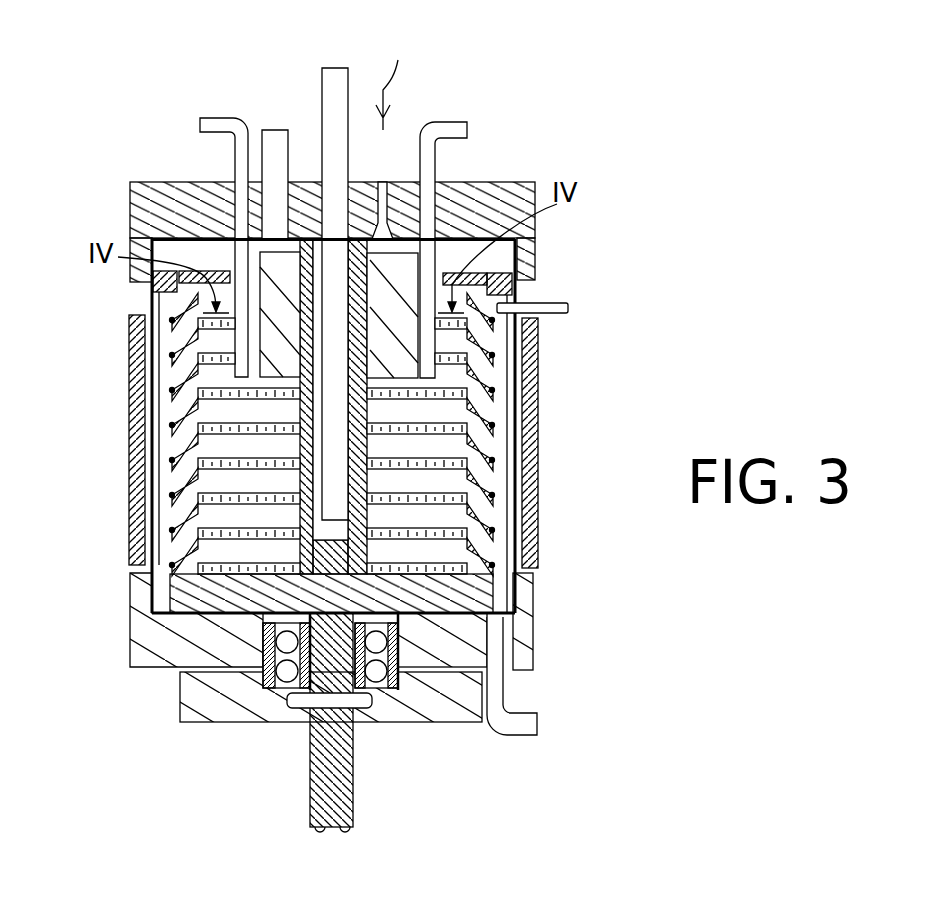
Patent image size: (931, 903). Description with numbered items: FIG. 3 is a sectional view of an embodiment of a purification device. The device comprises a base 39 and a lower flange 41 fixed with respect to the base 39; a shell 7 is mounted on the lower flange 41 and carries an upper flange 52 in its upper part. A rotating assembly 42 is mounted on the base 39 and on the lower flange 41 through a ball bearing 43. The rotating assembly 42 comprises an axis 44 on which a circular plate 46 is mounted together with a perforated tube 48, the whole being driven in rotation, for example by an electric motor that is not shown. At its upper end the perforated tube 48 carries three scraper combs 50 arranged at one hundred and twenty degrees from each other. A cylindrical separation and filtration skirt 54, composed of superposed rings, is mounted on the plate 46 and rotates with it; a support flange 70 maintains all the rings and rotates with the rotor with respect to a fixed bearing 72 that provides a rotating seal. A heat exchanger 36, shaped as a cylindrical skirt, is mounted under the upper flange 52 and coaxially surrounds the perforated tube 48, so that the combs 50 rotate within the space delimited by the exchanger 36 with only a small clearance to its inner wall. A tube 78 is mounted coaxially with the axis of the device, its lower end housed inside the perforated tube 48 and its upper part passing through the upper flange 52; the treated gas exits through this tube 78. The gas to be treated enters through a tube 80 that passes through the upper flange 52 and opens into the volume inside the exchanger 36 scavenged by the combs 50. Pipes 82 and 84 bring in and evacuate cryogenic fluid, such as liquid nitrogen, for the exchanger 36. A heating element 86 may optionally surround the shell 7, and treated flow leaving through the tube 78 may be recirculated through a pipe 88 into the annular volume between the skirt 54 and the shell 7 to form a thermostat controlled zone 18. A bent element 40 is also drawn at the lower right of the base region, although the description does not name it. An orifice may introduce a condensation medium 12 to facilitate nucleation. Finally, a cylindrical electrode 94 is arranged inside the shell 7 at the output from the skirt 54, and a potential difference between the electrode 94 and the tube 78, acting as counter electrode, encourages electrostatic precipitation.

The shell 7 is at (165, 294).
The condensation medium 12 is at (407, 77).
The thermostat controlled zone 18 is at (490, 449).
The heat exchanger 36 is at (173, 353).
The base 39 is at (194, 718).
The bracket 40 is at (528, 736).
The lower flange 41 is at (146, 640).
The rotating assembly 42 is at (362, 788).
The ball bearing 43 is at (263, 657).
The axis 44 is at (308, 773).
The circular plate 46 is at (494, 579).
The perforated tube 48 is at (418, 492).
The scraper combs 50 is at (415, 262).
The upper flange 52 is at (177, 190).
The separation and filtration skirt 54 is at (492, 389).
The support flange 70 is at (470, 279).
The fixed bearing 72 is at (513, 279).
The tube 78 is at (340, 76).
The tube 80 is at (277, 130).
The pipe 82 is at (217, 118).
The pipe 84 is at (447, 122).
The heating element 86 is at (134, 492).
The pipe 88 is at (562, 313).
The cylindrical electrode 94 is at (378, 193).